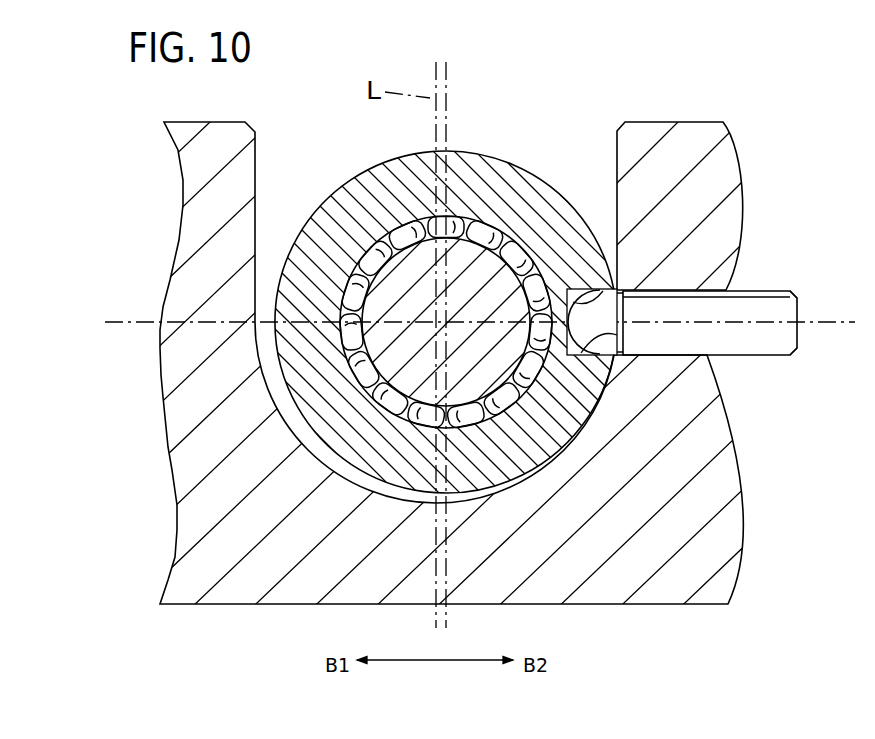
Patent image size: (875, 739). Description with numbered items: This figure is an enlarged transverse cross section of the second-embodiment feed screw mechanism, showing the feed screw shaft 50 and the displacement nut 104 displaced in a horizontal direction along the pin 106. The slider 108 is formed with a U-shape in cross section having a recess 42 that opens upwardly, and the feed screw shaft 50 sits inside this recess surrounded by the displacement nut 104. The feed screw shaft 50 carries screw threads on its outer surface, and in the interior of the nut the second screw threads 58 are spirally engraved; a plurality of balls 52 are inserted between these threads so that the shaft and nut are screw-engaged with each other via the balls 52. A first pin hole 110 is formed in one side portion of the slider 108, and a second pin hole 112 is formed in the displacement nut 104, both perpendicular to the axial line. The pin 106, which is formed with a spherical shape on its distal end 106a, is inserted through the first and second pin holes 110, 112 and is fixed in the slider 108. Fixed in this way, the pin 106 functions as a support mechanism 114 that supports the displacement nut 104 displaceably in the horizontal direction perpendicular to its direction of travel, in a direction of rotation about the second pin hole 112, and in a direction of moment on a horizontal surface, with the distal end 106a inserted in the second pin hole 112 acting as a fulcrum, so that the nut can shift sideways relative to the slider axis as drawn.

The recess 42 is at (257, 196).
The feed screw shaft 50 is at (402, 281).
The balls 52 is at (478, 228).
The second screw threads 58 is at (358, 275).
The displacement nut 104 is at (523, 164).
The pin 106 is at (701, 292).
The distal end 106a is at (590, 308).
The slider 108 is at (699, 121).
The first pin hole 110 is at (707, 333).
The second pin hole 112 is at (619, 338).
The support mechanism 114 is at (786, 360).